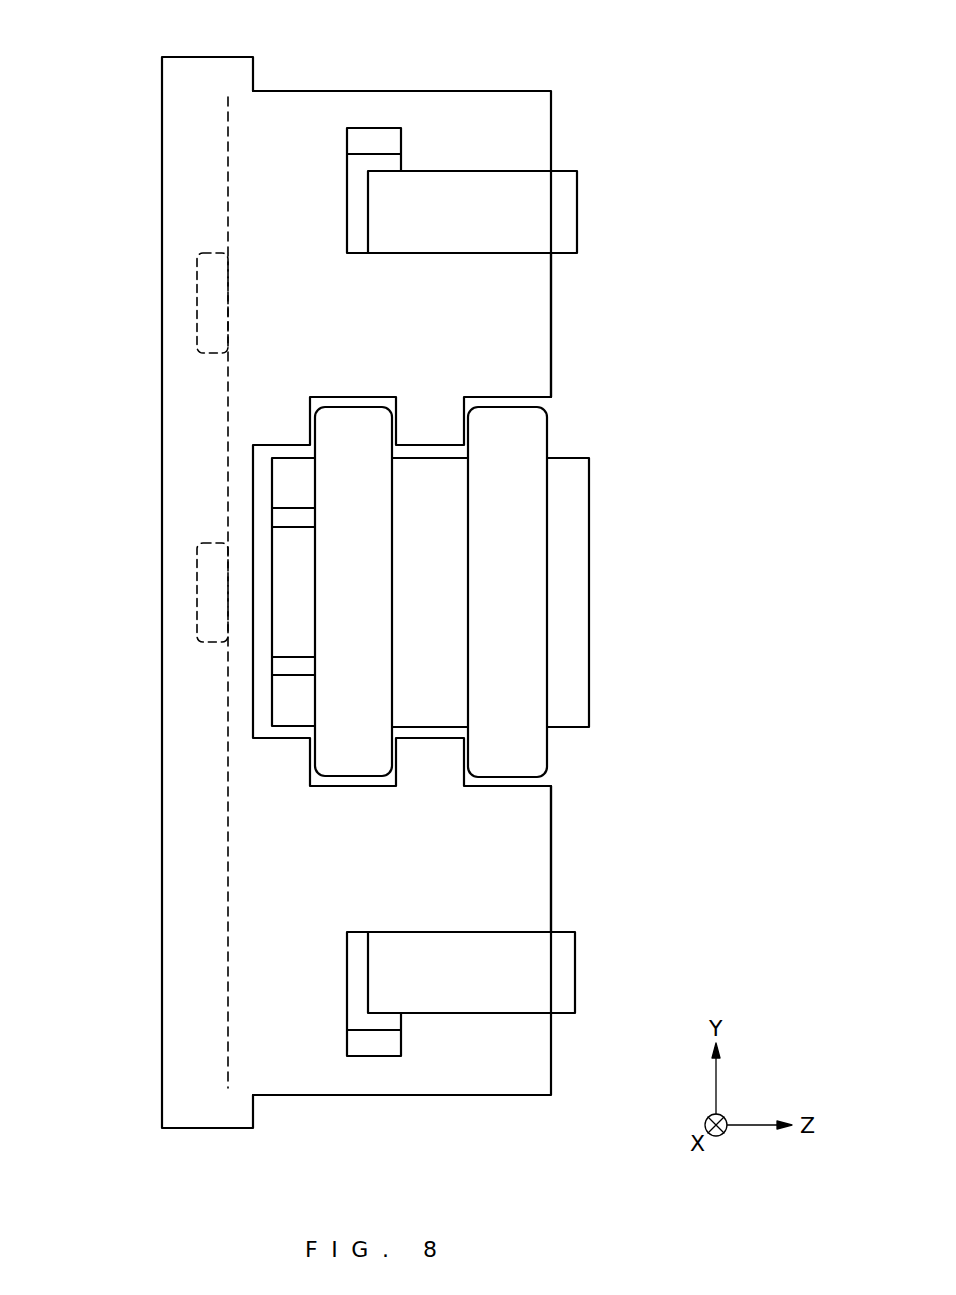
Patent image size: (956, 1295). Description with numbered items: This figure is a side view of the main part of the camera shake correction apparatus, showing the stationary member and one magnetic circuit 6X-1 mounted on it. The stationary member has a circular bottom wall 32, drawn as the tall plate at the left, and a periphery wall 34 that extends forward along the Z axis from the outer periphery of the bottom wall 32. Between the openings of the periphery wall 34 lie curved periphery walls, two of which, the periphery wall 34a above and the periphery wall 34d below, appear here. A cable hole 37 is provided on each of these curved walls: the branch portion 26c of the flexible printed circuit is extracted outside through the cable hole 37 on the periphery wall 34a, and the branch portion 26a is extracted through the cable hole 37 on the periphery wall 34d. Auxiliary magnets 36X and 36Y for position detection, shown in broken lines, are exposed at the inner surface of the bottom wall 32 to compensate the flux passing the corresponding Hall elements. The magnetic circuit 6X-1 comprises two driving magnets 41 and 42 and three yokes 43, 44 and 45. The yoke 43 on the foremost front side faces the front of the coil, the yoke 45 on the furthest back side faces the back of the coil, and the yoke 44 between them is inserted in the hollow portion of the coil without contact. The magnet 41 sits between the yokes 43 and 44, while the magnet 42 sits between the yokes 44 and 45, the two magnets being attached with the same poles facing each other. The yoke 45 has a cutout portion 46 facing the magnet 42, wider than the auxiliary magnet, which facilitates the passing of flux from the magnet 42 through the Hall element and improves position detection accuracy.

The bottom wall 32 is at (162, 137).
The periphery wall 34 is at (551, 91).
The curved periphery wall 34a is at (528, 322).
The curved periphery wall 34d is at (528, 863).
The branch portion 26a is at (562, 972).
The branch portion 26c is at (563, 213).
The cable hole 37 is at (374, 128).
The auxiliary magnet 36X is at (197, 597).
The auxiliary magnet 36Y is at (197, 307).
The magnetic circuit 6X-1 is at (404, 635).
The first magnet 41 is at (528, 753).
The second magnet 42 is at (355, 757).
The second yoke 43 is at (573, 592).
The first yoke 44 is at (430, 697).
The third yoke 45 is at (272, 700).
The cutout portion 46 is at (292, 543).